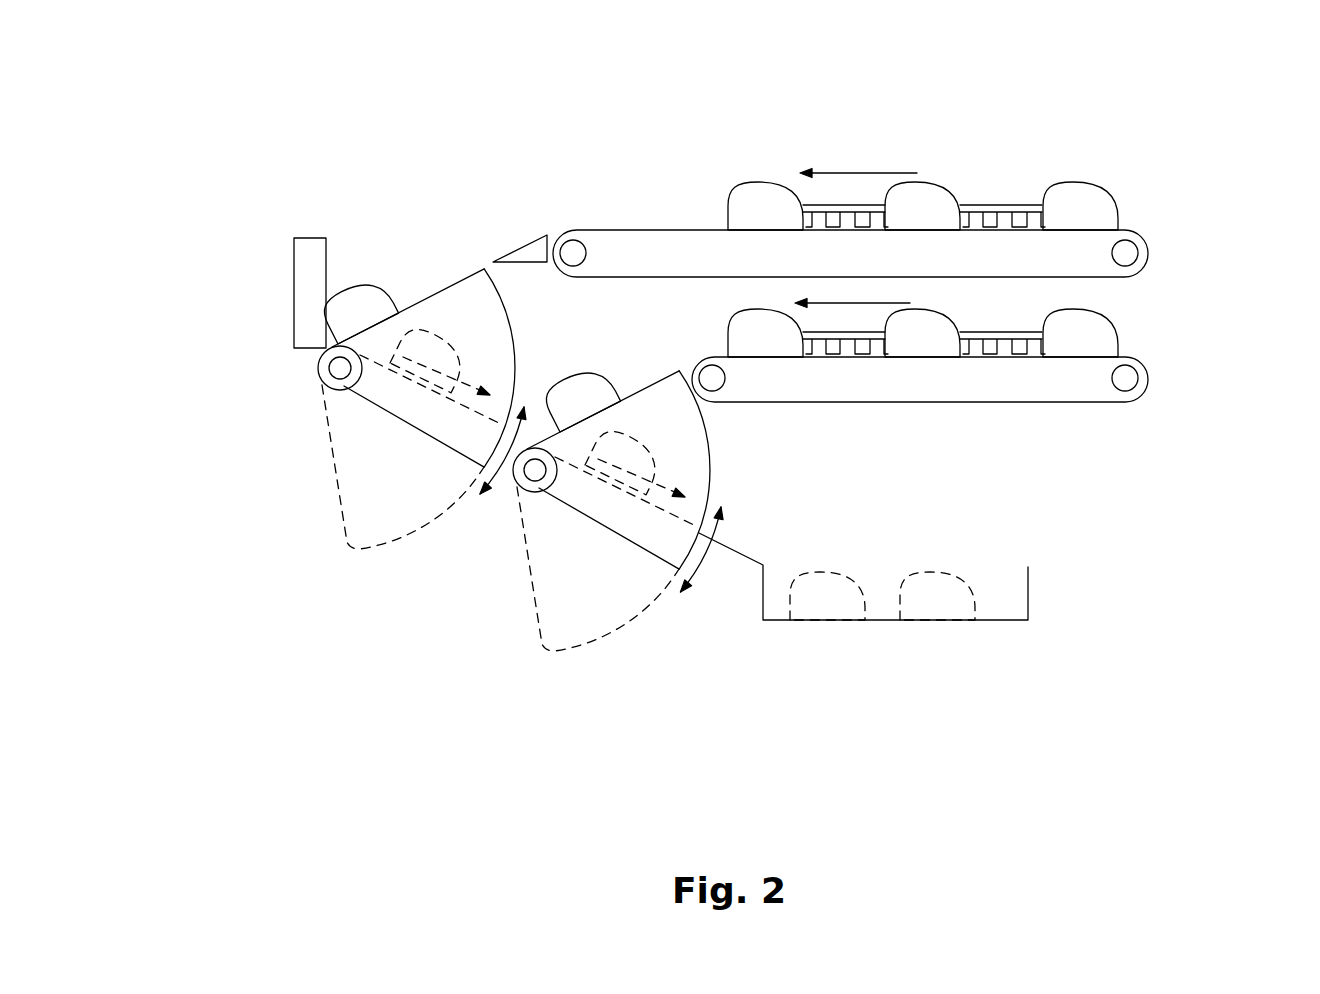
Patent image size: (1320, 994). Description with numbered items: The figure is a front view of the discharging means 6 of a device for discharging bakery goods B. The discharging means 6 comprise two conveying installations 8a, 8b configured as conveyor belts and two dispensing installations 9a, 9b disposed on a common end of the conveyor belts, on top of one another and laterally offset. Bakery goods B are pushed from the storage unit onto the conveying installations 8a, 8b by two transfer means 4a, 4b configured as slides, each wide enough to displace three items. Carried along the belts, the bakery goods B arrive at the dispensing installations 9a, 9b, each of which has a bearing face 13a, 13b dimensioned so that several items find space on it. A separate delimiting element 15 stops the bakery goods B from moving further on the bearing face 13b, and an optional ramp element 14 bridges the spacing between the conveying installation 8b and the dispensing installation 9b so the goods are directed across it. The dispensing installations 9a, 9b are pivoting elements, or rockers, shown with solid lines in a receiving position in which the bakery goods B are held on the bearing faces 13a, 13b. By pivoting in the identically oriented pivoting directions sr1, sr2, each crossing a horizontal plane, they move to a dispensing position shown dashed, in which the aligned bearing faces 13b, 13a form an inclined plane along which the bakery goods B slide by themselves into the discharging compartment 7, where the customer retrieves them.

The discharging means 6 is at (353, 197).
The bakery goods B is at (363, 264).
The delimiting element 15 is at (305, 313).
The bearing face 13b is at (427, 293).
The bearing face 13a is at (650, 387).
The ramp element 14 is at (515, 262).
The transfer means 4b is at (968, 210).
The transfer means 4a is at (995, 332).
The conveying installation 8b is at (1130, 232).
The conveying installation 8a is at (1135, 358).
The dispensing installation 9b is at (318, 362).
The dispensing installation 9a is at (515, 482).
The pivoting direction sr1 is at (492, 484).
The pivoting direction sr2 is at (695, 573).
The discharging compartment 7 is at (988, 620).